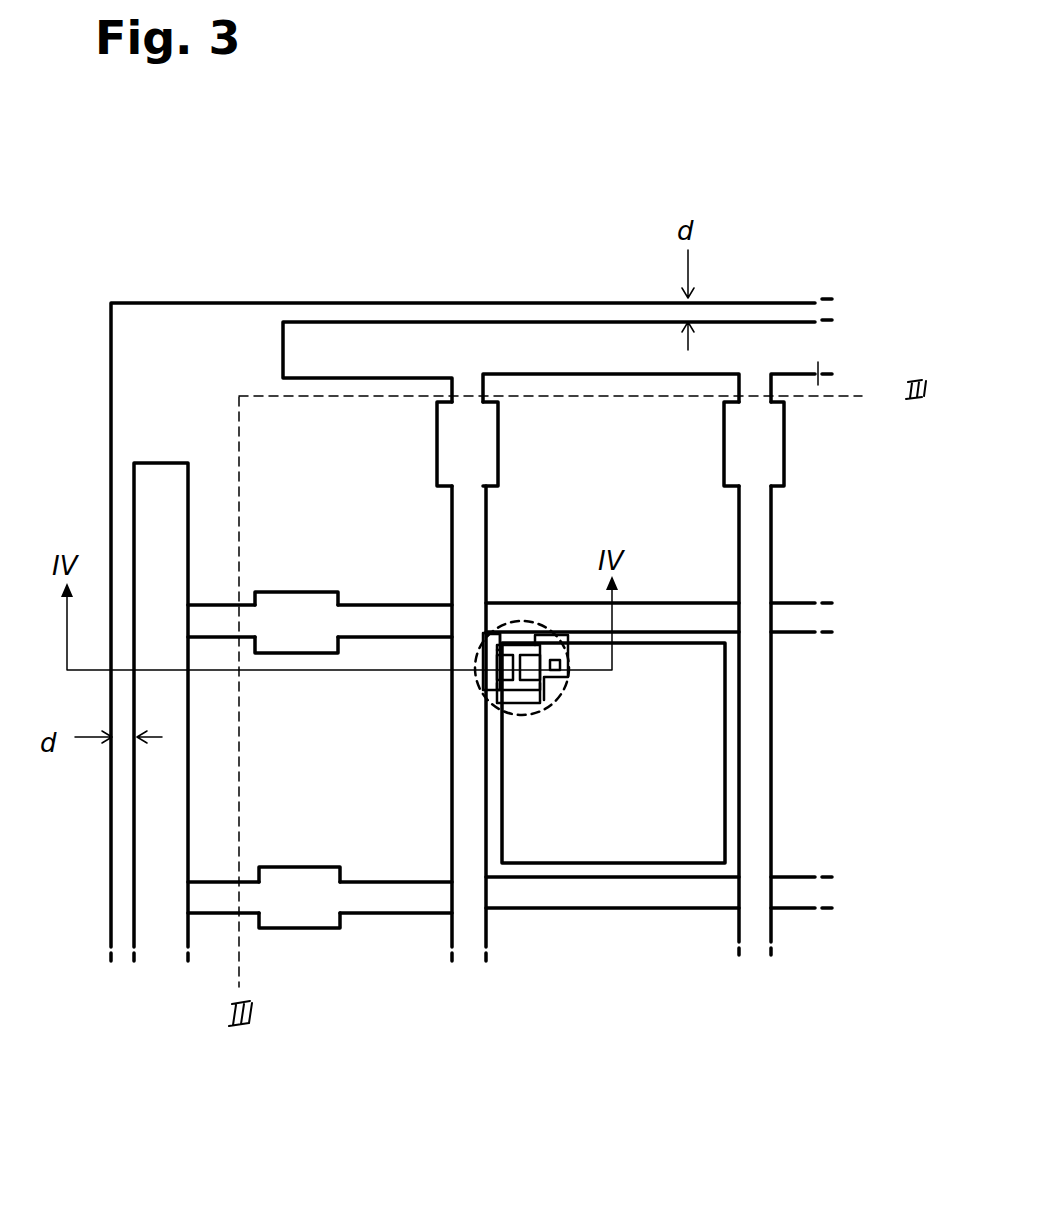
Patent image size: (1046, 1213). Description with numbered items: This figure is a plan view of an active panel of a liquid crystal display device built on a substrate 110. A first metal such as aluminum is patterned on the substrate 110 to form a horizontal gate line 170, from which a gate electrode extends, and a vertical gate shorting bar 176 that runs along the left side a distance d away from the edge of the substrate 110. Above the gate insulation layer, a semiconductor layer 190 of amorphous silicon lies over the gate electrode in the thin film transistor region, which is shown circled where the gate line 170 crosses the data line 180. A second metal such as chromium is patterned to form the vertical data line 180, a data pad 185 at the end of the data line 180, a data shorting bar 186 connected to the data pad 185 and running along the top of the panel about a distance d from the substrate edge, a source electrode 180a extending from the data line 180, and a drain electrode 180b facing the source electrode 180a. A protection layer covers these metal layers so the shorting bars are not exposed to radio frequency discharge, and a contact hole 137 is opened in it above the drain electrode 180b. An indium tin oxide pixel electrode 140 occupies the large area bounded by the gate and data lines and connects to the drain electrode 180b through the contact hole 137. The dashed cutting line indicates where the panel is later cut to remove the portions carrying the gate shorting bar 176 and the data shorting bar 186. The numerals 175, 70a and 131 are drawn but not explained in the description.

The substrate 110 is at (190, 325).
The data shorting bar 186 is at (598, 340).
The data pad 185 is at (490, 441).
The gate line pad 175 is at (292, 605).
The semiconductor layer 190 is at (518, 648).
The contact hole 137 is at (550, 650).
The gate line 170 is at (790, 603).
The data line 180 is at (458, 925).
The source electrode 180a is at (470, 668).
The drain electrode 180b is at (568, 672).
The semiconductor layer 70a is at (535, 713).
The gate electrode 131 is at (560, 698).
The pixel electrode 140 is at (712, 793).
The gate shorting bar 176 is at (140, 775).